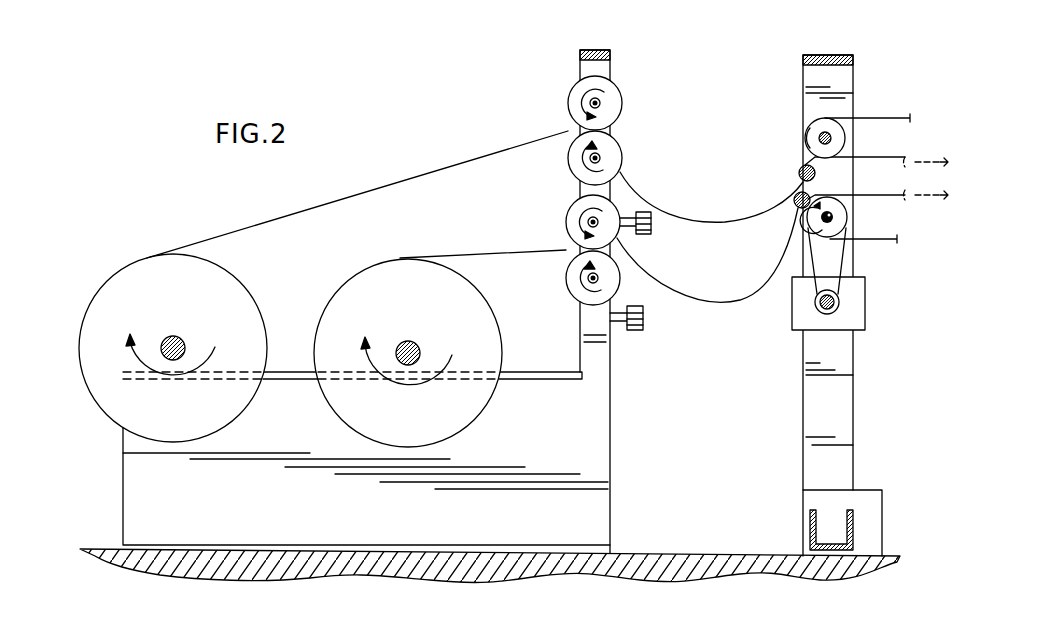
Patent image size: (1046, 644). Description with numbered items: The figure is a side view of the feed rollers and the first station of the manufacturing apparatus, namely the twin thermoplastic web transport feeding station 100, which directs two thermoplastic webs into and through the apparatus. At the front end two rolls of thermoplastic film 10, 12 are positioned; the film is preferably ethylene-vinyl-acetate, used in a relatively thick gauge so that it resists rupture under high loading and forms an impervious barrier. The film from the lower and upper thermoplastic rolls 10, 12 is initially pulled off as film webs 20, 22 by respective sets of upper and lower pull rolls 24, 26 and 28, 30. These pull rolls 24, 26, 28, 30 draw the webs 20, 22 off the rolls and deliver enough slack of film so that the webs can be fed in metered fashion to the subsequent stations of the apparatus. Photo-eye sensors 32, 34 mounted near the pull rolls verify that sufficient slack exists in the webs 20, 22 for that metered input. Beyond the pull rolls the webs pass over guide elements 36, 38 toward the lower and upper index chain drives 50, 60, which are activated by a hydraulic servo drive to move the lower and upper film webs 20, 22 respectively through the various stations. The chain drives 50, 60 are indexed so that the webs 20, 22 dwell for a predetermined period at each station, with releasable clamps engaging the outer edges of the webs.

The roll of thermoplastic film 10 is at (118, 308).
The roll of thermoplastic film 12 is at (360, 313).
The film web 20 is at (440, 170).
The film web 22 is at (518, 252).
The pull roll 24 is at (623, 89).
The pull roll 26 is at (623, 145).
The pull roll 28 is at (618, 240).
The pull roll 30 is at (572, 297).
The photo-eye sensor 32 is at (650, 230).
The photo-eye sensor 34 is at (645, 322).
The guide roller 36 is at (801, 167).
The guide roller 38 is at (797, 208).
The lower index chain drive 50 is at (879, 138).
The upper index chain drive 60 is at (892, 210).
The twin thermoplastic web transport feeding station 100 is at (824, 42).